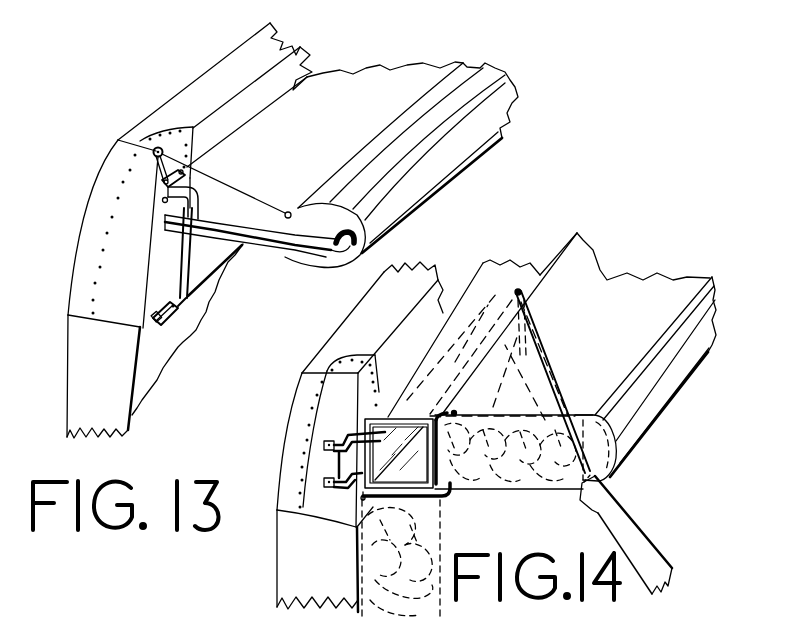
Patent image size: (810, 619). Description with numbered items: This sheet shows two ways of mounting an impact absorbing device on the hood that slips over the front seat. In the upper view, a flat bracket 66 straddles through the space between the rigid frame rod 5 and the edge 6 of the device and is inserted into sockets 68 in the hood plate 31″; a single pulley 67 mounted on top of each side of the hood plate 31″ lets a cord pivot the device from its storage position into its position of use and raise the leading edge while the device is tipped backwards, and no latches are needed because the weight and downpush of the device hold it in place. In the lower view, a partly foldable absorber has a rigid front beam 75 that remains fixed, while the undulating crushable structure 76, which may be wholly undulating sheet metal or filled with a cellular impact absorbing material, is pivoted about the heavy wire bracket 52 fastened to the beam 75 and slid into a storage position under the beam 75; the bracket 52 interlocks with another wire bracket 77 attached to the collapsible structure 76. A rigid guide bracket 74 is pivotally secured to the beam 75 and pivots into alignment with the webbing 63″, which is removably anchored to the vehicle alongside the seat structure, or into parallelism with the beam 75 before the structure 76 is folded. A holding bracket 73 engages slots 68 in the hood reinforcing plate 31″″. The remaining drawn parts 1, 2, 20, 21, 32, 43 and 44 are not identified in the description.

In FIG. 13, the roofing sheet 1 is at (228, 231).
In FIG. 13, the roll 2 is at (401, 165).
In FIG. 13, the rigid frame rod 5 is at (278, 249).
In FIG. 14, the edge of the device 6 is at (541, 490).
In FIG. 13, the bottom rail 20 is at (458, 176).
In FIG. 14, the bottom rail 20 is at (670, 401).
In FIG. 14, the roll 21 is at (594, 413).
In FIG. 13, the hood plate 31 is at (130, 227).
In FIG. 14, the hood plate 31 is at (290, 518).
In FIG. 13, the cover strip 32 is at (209, 81).
In FIG. 14, the cover strip 32 is at (372, 317).
In FIG. 13, the lower wall panel 43 is at (103, 376).
In FIG. 14, the lower wall panel 43 is at (325, 559).
In FIG. 13, the link 44 is at (285, 212).
In FIG. 14, the heavy wire bracket 52 is at (445, 495).
In FIG. 14, the webbing 63 is at (637, 528).
In FIG. 13, the flat bracket 66 is at (183, 252).
In FIG. 13, the pulley 67 is at (122, 139).
In FIG. 13, the sockets 68 is at (180, 318).
In FIG. 14, the sockets 68 is at (338, 488).
In FIG. 14, the holding bracket 73 is at (357, 427).
In FIG. 14, the rigid guide bracket 74 is at (452, 355).
In FIG. 14, the rigid front beam 75 is at (418, 412).
In FIG. 14, the undulating crushable structure 76 is at (485, 516).
In FIG. 14, the wire bracket 77 is at (466, 410).